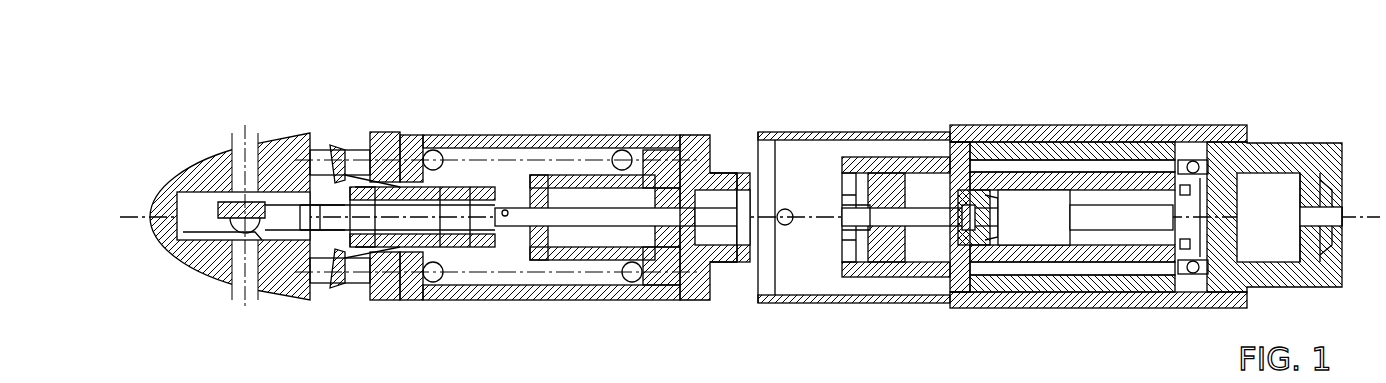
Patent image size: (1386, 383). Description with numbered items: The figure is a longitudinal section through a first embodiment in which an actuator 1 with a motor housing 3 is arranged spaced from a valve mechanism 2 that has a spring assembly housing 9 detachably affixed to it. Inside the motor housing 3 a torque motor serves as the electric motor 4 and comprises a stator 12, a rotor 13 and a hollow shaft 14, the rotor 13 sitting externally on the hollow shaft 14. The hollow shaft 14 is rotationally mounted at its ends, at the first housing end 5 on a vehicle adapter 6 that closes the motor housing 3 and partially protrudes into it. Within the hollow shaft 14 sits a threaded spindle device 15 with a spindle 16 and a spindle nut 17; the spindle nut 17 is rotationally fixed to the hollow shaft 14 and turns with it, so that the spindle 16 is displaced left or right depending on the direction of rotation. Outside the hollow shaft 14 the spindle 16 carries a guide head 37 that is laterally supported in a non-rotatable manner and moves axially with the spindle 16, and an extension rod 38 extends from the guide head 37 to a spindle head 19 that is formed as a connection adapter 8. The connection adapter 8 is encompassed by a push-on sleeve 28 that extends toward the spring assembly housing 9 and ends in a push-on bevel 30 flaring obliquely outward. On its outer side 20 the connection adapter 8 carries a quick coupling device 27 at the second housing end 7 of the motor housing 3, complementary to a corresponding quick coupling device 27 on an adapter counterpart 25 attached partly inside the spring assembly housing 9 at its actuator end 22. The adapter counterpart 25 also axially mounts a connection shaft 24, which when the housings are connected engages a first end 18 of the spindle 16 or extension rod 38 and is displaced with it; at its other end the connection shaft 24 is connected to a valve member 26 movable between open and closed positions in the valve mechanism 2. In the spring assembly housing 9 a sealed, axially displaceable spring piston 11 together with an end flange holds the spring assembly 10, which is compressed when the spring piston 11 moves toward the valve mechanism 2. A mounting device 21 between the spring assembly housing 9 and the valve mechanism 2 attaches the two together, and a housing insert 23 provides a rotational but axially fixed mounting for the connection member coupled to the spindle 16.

The actuator 1 is at (1075, 71).
The valve mechanism 2 is at (231, 104).
The motor housing 3 is at (1138, 127).
The electric motor 4 is at (1058, 301).
The first housing end 5 is at (1245, 140).
The vehicle adapter 6 is at (1356, 208).
The second housing end 7 is at (952, 133).
The connection adapter 8 is at (897, 148).
The spring assembly housing 9 is at (503, 133).
The spring assembly 10 is at (450, 135).
The spring piston 11 is at (590, 175).
The stator 12 is at (1113, 285).
The rotor 13 is at (1113, 153).
The hollow shaft 14 is at (1035, 262).
The threaded spindle device 15 is at (1021, 223).
The spindle 16 is at (1100, 225).
The spindle nut 17 is at (1050, 198).
The first end 18 is at (882, 222).
The spindle head 19 is at (867, 240).
The outer side 20 is at (827, 197).
The mounting device 21 is at (337, 111).
The actuator end 22 is at (702, 112).
The housing insert 23 is at (703, 270).
The connection shaft 24 is at (603, 222).
The adapter counterpart 25 is at (723, 173).
The valve member 26 is at (375, 232).
The quick coupling device 27 is at (776, 176).
The push-on sleeve 28 is at (872, 155).
The push-on bevel 30 is at (763, 153).
The guide head 37 is at (981, 235).
The extension rod 38 is at (928, 222).